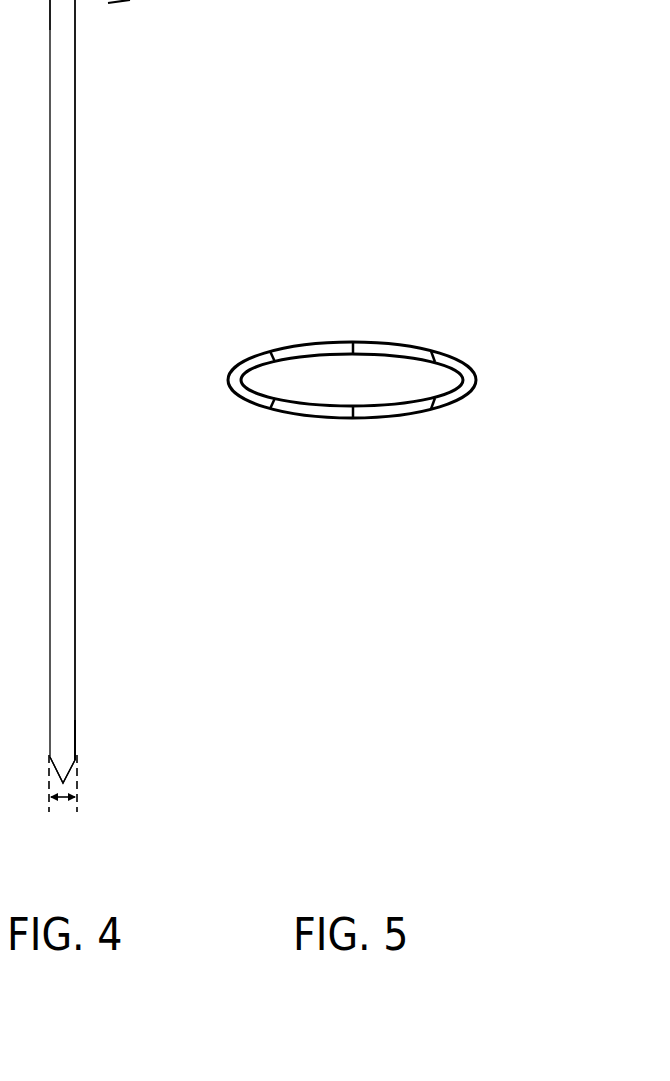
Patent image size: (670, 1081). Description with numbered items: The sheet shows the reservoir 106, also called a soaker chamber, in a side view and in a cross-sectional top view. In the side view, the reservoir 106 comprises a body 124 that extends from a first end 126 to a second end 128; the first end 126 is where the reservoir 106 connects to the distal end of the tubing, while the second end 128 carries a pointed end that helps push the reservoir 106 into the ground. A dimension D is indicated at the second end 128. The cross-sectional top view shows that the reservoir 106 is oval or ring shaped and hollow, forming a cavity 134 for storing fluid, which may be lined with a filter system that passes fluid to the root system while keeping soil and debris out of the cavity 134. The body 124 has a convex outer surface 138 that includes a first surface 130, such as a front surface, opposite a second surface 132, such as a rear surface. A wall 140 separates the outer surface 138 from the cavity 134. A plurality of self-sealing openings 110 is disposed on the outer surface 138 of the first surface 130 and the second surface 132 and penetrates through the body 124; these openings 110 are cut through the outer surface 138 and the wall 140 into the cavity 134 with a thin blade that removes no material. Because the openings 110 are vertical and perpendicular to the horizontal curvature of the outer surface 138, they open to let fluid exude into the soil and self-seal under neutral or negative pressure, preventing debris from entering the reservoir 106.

In FIG. 4, the reservoir 106 is at (118, 179).
In FIG. 5, the reservoir 106 is at (392, 287).
In FIG. 5, the self-sealing openings 110 is at (351, 346).
In FIG. 4, the body 124 is at (75, 61).
In FIG. 5, the body 124 is at (317, 422).
In FIG. 4, the first end 126 is at (186, 0).
In FIG. 4, the second end 128 is at (108, 752).
In FIG. 5, the first surface 130 is at (340, 452).
In FIG. 5, the second surface 132 is at (366, 326).
In FIG. 5, the cavity 134 is at (374, 394).
In FIG. 5, the outer surface 138 is at (370, 437).
In FIG. 5, the wall 140 is at (452, 358).
In FIG. 4, the diameter D is at (70, 817).